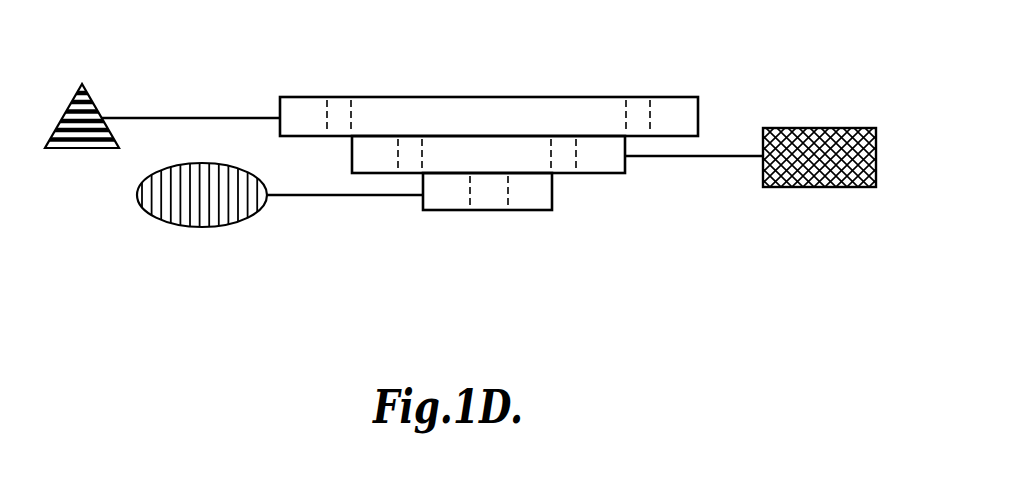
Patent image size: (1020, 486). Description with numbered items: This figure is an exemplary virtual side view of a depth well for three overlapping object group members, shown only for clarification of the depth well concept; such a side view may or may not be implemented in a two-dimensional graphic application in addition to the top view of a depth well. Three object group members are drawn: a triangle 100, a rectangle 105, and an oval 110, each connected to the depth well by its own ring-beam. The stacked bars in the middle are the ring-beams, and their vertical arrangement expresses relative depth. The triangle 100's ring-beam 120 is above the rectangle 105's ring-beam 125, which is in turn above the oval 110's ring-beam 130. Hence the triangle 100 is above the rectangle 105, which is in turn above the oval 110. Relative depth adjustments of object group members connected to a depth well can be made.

The triangle 100 is at (92, 98).
The rectangle 105 is at (823, 128).
The oval 110 is at (227, 225).
The ring-beam 120 is at (698, 100).
The ring-beam 125 is at (615, 174).
The ring-beam 130 is at (538, 211).